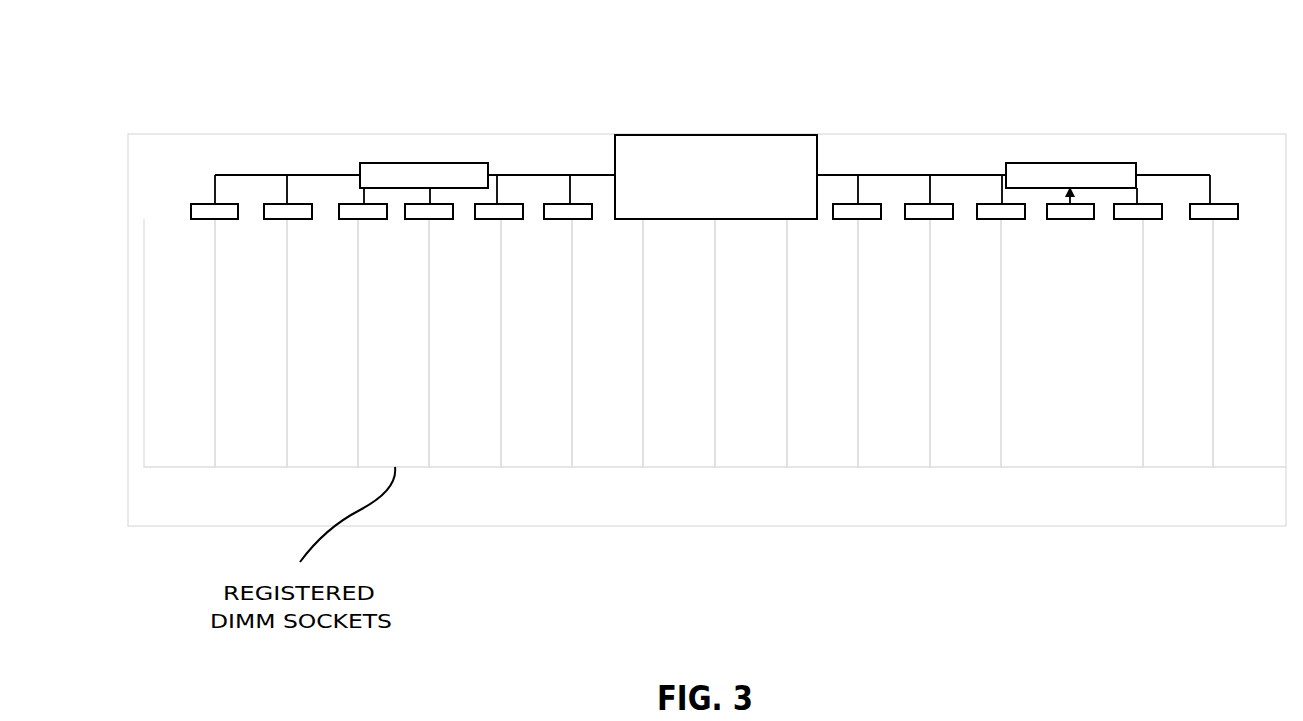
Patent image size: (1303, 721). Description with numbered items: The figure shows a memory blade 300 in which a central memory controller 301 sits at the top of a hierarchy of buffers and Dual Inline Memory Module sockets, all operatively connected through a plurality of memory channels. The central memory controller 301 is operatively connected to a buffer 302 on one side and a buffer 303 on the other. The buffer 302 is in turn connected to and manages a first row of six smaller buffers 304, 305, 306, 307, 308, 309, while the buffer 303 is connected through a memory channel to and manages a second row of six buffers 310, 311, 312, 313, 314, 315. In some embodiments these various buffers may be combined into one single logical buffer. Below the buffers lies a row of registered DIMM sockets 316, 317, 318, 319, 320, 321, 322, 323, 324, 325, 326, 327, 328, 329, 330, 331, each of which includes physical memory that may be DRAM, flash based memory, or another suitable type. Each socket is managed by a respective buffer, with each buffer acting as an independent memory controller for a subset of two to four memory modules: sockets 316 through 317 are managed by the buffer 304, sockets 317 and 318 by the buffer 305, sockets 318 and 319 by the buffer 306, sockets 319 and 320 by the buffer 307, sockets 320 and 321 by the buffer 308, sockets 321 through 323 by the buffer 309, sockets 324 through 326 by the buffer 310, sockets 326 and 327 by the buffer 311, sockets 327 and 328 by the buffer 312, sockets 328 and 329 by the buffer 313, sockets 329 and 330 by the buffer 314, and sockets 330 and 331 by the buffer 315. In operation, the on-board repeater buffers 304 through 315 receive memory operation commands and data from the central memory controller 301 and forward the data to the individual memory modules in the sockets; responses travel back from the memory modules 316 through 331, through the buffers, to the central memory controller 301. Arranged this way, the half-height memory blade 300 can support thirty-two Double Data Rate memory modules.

The memory blade 300 is at (118, 92).
The central memory controller 301 is at (733, 135).
The buffer 302 is at (360, 172).
The buffer 303 is at (1136, 166).
The buffer 304 is at (254, 216).
The buffer 305 is at (328, 216).
The buffer 306 is at (387, 212).
The buffer 307 is at (453, 212).
The buffer 308 is at (539, 216).
The buffer 309 is at (608, 216).
The buffer 310 is at (897, 216).
The buffer 311 is at (969, 216).
The buffer 312 is at (1025, 212).
The buffer 313 is at (1094, 212).
The buffer 314 is at (1176, 202).
The buffer 315 is at (1256, 196).
The DIMM socket 316 is at (155, 356).
The DIMM socket 317 is at (227, 356).
The DIMM socket 318 is at (299, 356).
The DIMM socket 319 is at (372, 353).
The DIMM socket 320 is at (440, 356).
The DIMM socket 321 is at (521, 356).
The DIMM socket 322 is at (595, 356).
The DIMM socket 323 is at (658, 353).
The DIMM socket 324 is at (732, 359).
The DIMM socket 325 is at (802, 357).
The DIMM socket 326 is at (880, 357).
The DIMM socket 327 is at (945, 356).
The DIMM socket 328 is at (1015, 359).
The DIMM socket 329 is at (1088, 353).
The DIMM socket 330 is at (1160, 354).
The DIMM socket 331 is at (1240, 359).